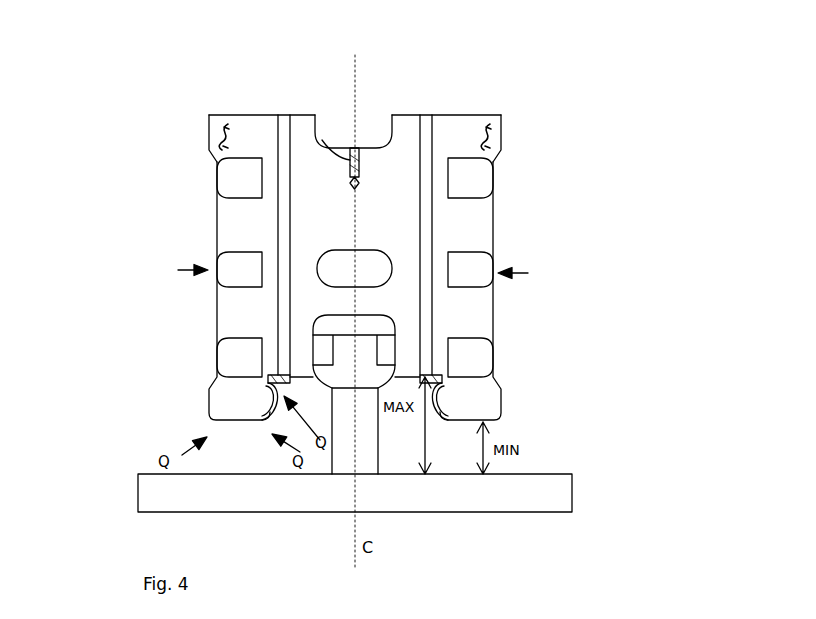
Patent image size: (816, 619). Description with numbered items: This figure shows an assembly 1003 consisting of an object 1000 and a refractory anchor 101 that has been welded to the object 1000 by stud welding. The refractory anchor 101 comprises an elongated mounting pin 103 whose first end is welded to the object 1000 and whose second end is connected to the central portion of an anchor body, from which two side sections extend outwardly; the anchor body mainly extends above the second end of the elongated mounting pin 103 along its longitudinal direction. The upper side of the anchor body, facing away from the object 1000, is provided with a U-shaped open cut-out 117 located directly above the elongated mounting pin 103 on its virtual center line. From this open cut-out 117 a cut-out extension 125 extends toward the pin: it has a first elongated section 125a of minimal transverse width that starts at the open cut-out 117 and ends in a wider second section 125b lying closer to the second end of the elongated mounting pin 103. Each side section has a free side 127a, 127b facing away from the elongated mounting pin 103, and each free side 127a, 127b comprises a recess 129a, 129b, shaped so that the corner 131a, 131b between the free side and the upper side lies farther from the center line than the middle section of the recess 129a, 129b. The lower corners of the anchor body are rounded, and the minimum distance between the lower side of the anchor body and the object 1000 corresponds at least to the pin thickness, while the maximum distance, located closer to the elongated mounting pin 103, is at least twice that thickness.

The refractory anchor 101 is at (558, 205).
The elongated mounting pin 103 is at (357, 438).
The open cut-out 117 is at (368, 107).
The cut-out extension 125 is at (375, 168).
The first elongated section 125a is at (349, 162).
The second section 125b is at (350, 186).
The free side 127a is at (493, 300).
The free side 127b is at (217, 303).
The recess 129a is at (516, 233).
The recess 129b is at (184, 224).
The corner 131a is at (501, 115).
The corner 131b is at (205, 112).
The object 1000 is at (515, 488).
The assembly 1003 is at (149, 166).